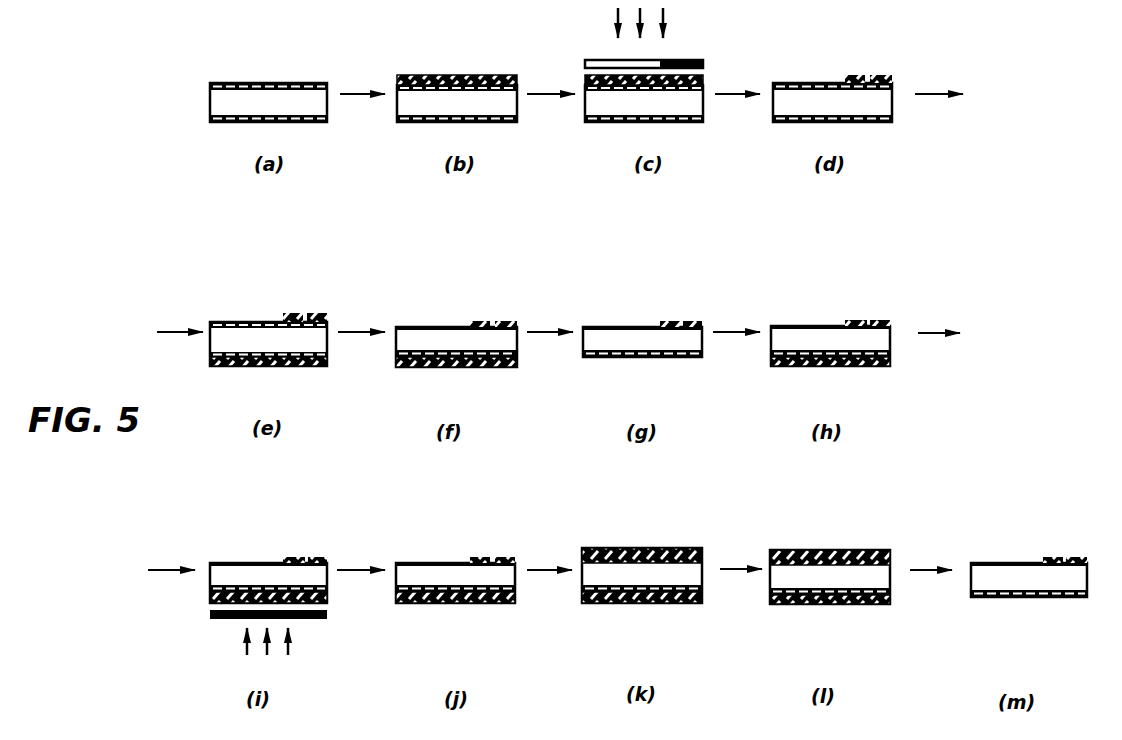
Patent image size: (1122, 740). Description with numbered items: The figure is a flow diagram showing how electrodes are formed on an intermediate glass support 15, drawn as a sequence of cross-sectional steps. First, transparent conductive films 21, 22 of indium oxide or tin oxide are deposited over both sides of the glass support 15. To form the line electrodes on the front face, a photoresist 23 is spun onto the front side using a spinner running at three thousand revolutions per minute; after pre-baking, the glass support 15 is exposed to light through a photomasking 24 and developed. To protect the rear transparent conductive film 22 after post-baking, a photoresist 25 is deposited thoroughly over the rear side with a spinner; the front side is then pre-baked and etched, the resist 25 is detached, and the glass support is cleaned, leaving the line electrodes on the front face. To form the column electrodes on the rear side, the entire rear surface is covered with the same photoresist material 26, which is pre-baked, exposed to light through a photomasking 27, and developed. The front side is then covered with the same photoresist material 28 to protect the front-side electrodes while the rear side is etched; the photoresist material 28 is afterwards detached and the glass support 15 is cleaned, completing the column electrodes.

The glass support 15 is at (223, 105).
The transparent conductive film 21 is at (232, 83).
The transparent conductive film 22 is at (223, 122).
The photoresist 23 is at (428, 75).
The photomasking 24 is at (703, 65).
The photoresist 25 is at (312, 358).
The photoresist material 26 is at (780, 366).
The photomasking 27 is at (328, 617).
The photoresist material 28 is at (652, 548).